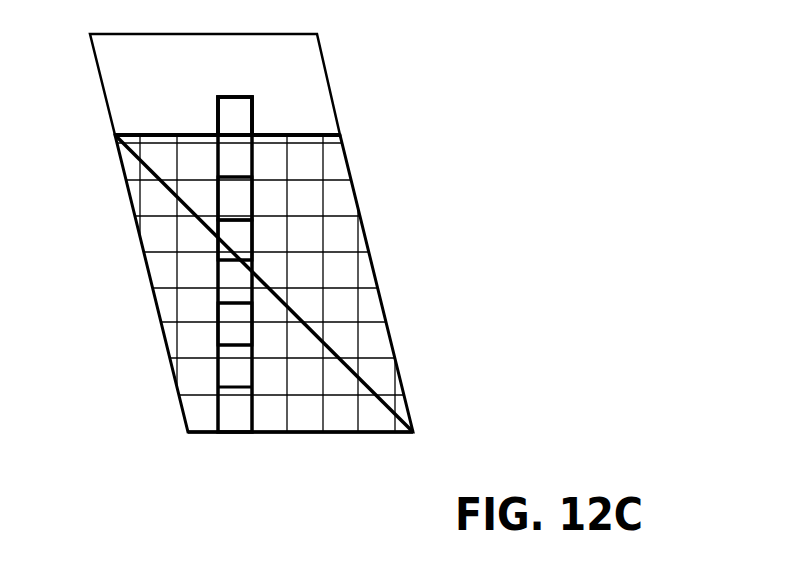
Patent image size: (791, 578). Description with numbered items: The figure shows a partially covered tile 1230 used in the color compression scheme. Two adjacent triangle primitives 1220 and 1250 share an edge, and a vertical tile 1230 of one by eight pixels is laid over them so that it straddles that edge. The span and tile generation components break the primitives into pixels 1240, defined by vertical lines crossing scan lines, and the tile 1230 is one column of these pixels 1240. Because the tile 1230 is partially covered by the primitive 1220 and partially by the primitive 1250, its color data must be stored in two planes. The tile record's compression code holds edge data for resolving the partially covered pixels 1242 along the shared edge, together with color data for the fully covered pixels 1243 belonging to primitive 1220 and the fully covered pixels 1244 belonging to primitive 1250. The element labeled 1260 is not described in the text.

The upper section of sensor array 1260 is at (408, 60).
The triangle primitive 1250 is at (422, 343).
The triangle primitive 1220 is at (192, 445).
The pixels 1240 is at (243, 433).
The tile 1230 is at (232, 100).
The fully covered pixels 1244 is at (228, 118).
The partially covered pixels 1242 is at (238, 241).
The fully covered pixels 1243 is at (235, 334).